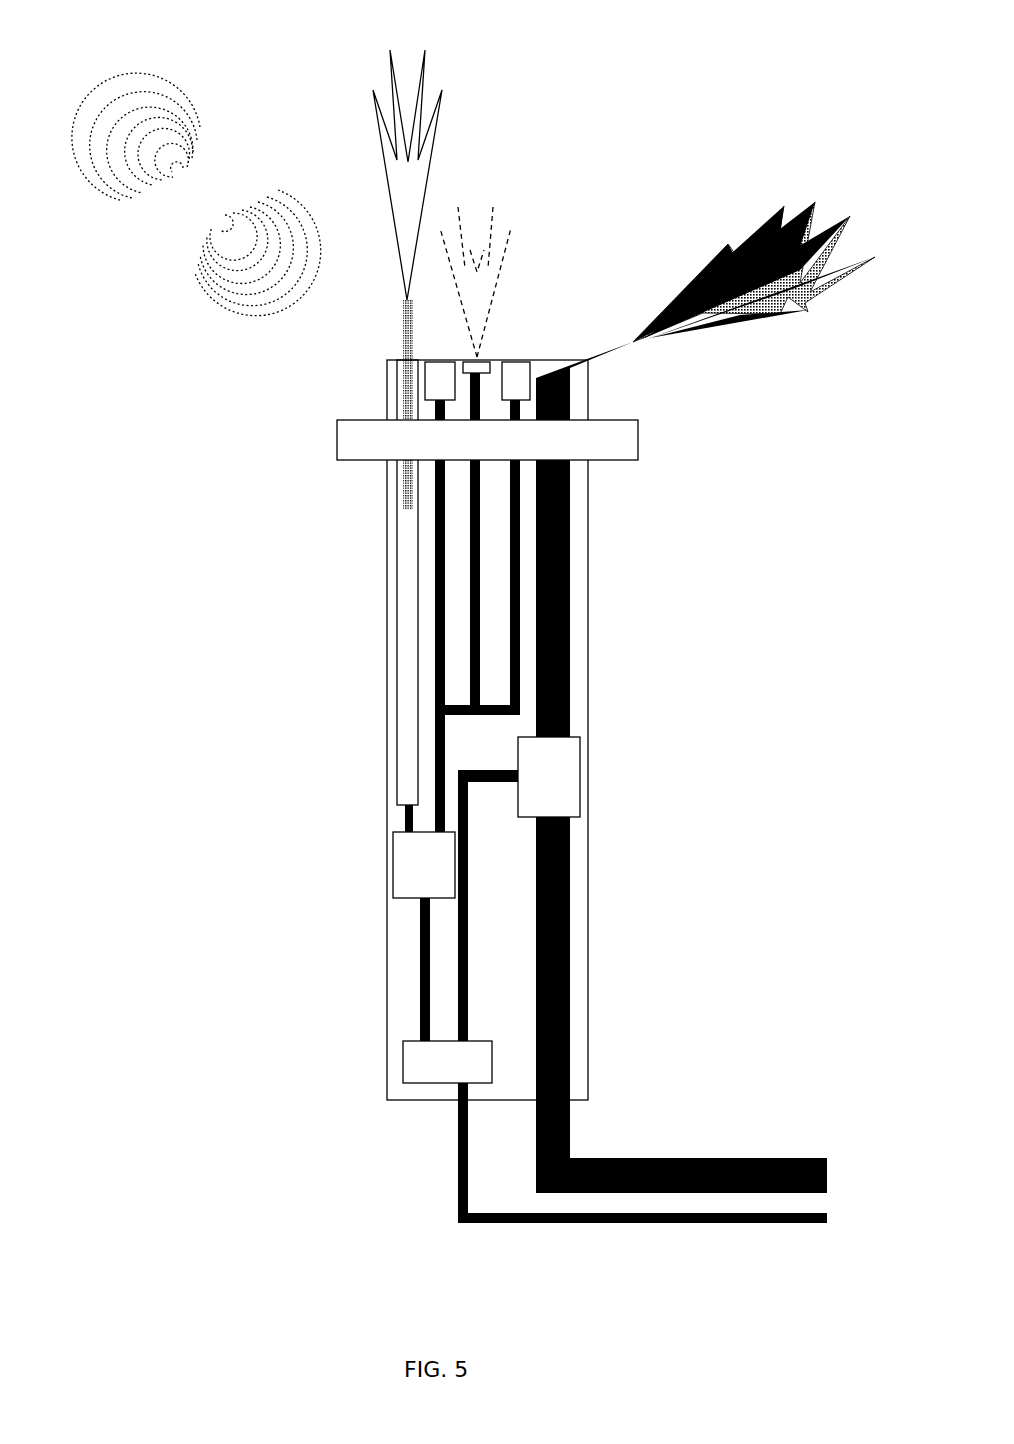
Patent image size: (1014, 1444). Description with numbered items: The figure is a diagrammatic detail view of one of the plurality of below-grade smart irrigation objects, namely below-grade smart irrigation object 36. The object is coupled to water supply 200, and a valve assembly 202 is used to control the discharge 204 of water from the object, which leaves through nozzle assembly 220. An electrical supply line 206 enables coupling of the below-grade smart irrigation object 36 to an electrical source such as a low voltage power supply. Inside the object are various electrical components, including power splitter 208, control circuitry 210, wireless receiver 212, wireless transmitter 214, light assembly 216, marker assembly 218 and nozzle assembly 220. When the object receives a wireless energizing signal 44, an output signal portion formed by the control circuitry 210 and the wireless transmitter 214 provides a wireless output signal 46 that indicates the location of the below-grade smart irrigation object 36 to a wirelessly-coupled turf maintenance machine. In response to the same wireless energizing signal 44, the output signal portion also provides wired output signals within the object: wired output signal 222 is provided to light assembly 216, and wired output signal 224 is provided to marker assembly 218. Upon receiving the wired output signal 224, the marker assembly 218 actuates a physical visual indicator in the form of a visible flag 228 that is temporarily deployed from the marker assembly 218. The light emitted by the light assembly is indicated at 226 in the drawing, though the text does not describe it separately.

The below-grade smart irrigation object 36 is at (53, 29).
The wireless energizing signal 44 is at (205, 290).
The wireless output signal 46 is at (195, 103).
The water supply 200 is at (827, 1180).
The valve assembly 202 is at (549, 777).
The discharge 204 is at (863, 218).
The electrical supply line 206 is at (827, 1218).
The power splitter 208 is at (447, 1062).
The control circuitry 210 is at (424, 865).
The wireless receiver 212 is at (437, 380).
The wireless transmitter 214 is at (517, 370).
The light assembly 216 is at (481, 360).
The marker assembly 218 is at (412, 642).
The nozzle assembly 220 is at (620, 360).
The wired output signal 222 is at (467, 535).
The wired output signal 224 is at (400, 818).
The emitted radiation 226 is at (497, 267).
The visible flag 228 is at (432, 137).